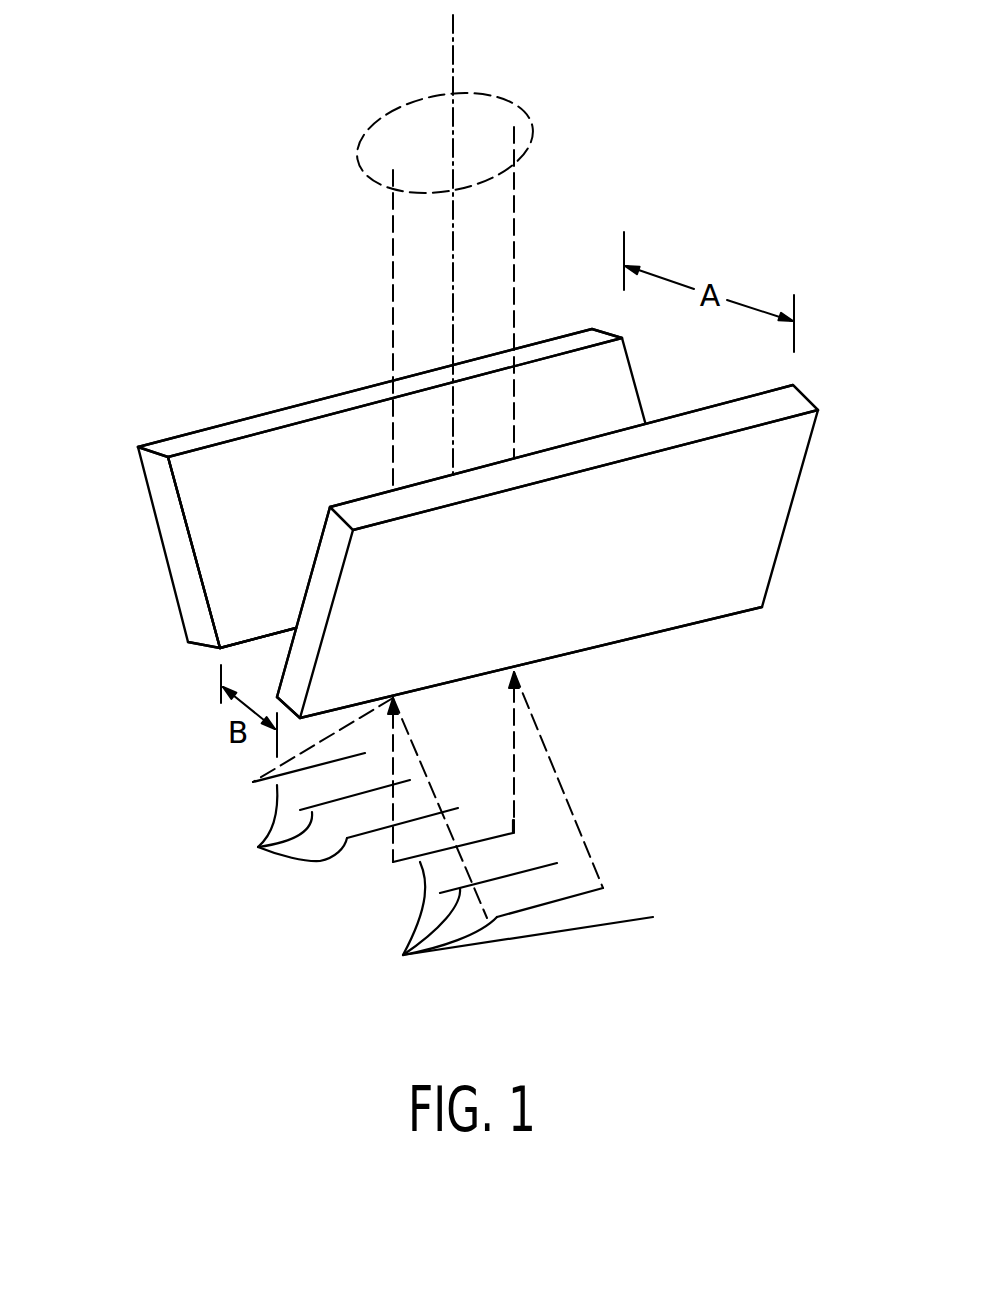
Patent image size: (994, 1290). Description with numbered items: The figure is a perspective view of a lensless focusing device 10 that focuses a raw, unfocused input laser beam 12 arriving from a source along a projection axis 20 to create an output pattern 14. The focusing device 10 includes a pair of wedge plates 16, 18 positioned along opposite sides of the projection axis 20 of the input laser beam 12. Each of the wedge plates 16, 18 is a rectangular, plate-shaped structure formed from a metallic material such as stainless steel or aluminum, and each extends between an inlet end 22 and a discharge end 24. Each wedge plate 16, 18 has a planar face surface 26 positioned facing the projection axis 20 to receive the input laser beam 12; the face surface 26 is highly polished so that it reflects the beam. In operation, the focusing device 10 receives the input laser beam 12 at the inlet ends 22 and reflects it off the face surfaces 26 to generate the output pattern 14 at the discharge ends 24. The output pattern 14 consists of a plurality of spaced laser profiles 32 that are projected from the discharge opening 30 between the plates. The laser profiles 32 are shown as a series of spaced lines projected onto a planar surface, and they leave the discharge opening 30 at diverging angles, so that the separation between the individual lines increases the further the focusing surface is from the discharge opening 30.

The lensless focusing device 10 is at (840, 427).
The input laser beam 12 is at (543, 226).
The output pattern 14 is at (648, 829).
The wedge plate 16 is at (757, 513).
The wedge plate 18 is at (165, 510).
The projection axis 20 is at (462, 43).
The inlet end 22 is at (266, 414).
The discharge end 24 is at (190, 645).
The face surface 26 is at (205, 465).
The discharge opening 30 is at (255, 663).
The laser profiles 32 is at (258, 847).